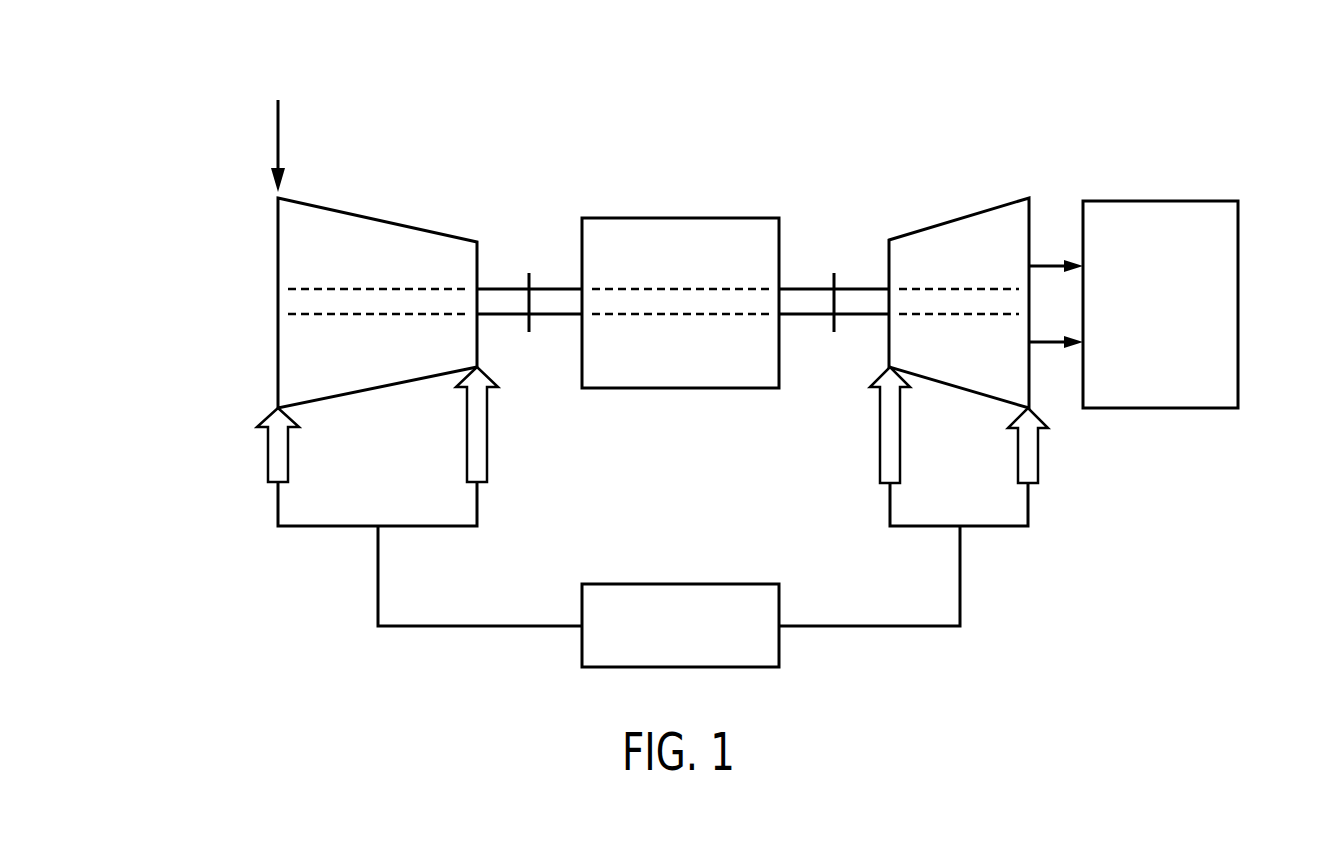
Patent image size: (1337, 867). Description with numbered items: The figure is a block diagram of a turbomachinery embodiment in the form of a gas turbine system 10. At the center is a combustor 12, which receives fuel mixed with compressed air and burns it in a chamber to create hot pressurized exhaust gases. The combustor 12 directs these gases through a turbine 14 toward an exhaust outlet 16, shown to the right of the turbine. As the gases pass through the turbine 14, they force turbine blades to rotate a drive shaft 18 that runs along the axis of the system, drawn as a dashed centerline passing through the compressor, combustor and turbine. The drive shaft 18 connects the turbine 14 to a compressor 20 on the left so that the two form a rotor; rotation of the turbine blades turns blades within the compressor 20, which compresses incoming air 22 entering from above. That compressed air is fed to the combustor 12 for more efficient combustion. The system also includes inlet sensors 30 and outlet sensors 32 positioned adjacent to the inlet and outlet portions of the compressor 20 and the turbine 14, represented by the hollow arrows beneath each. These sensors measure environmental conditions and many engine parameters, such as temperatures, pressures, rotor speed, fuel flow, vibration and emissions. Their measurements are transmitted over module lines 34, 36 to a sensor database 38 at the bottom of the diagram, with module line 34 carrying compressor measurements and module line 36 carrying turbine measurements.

The gas turbine system 10 is at (972, 103).
The combustor 12 is at (680, 218).
The turbine 14 is at (958, 219).
The exhaust outlet 16 is at (1160, 201).
The drive shaft 18 is at (803, 289).
The compressor 20 is at (377, 219).
The incoming air 22 is at (279, 140).
The inlet sensors 30 is at (268, 452).
The outlet sensors 32 is at (487, 436).
The module line 34 is at (378, 577).
The module line 36 is at (960, 573).
The sensor database 38 is at (682, 584).